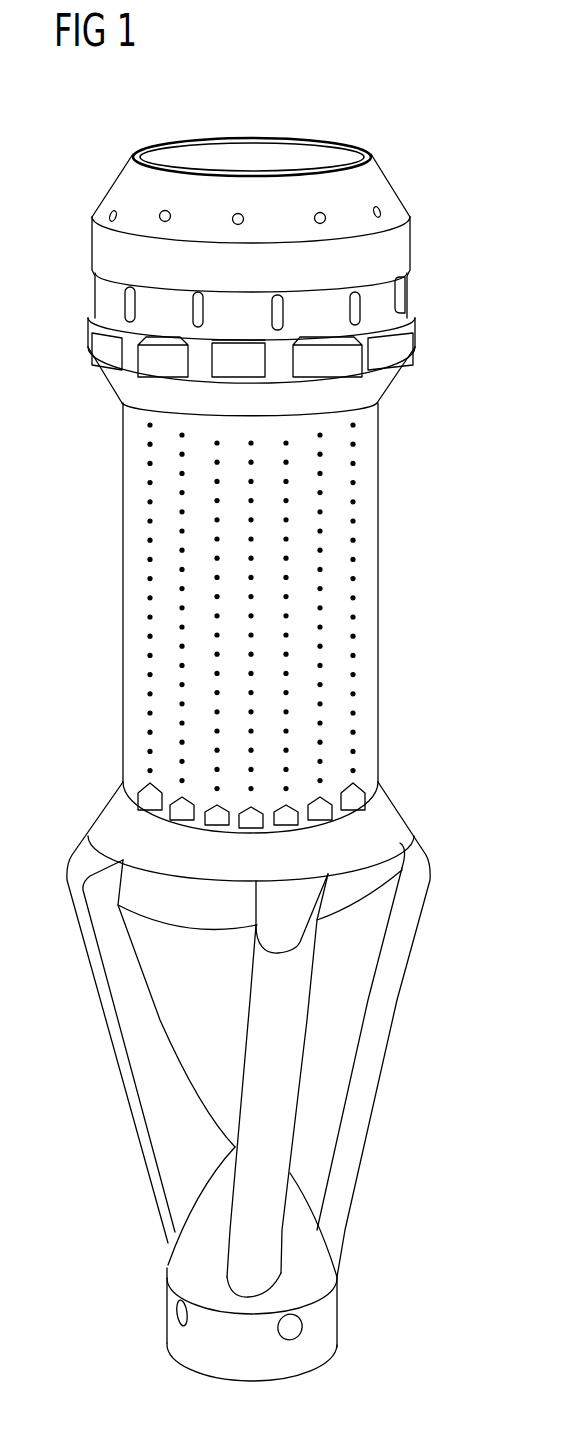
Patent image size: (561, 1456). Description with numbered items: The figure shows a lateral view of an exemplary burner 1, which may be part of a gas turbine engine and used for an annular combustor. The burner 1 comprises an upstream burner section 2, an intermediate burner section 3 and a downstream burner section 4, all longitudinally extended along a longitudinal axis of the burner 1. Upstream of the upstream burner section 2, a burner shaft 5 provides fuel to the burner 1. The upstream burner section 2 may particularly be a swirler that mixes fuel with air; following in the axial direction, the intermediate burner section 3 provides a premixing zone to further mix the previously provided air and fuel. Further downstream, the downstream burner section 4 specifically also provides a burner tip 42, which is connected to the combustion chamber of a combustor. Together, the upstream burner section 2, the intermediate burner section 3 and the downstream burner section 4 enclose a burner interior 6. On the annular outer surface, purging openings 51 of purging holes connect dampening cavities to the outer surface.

The burner 1 is at (96, 168).
The upstream burner section 2 is at (437, 812).
The intermediate burner section 3 is at (437, 418).
The downstream burner section 4 is at (437, 162).
The burner shaft 5 is at (437, 1272).
The burner interior 6 is at (259, 162).
The burner tip 42 is at (372, 182).
The purging opening 51 is at (149, 618).